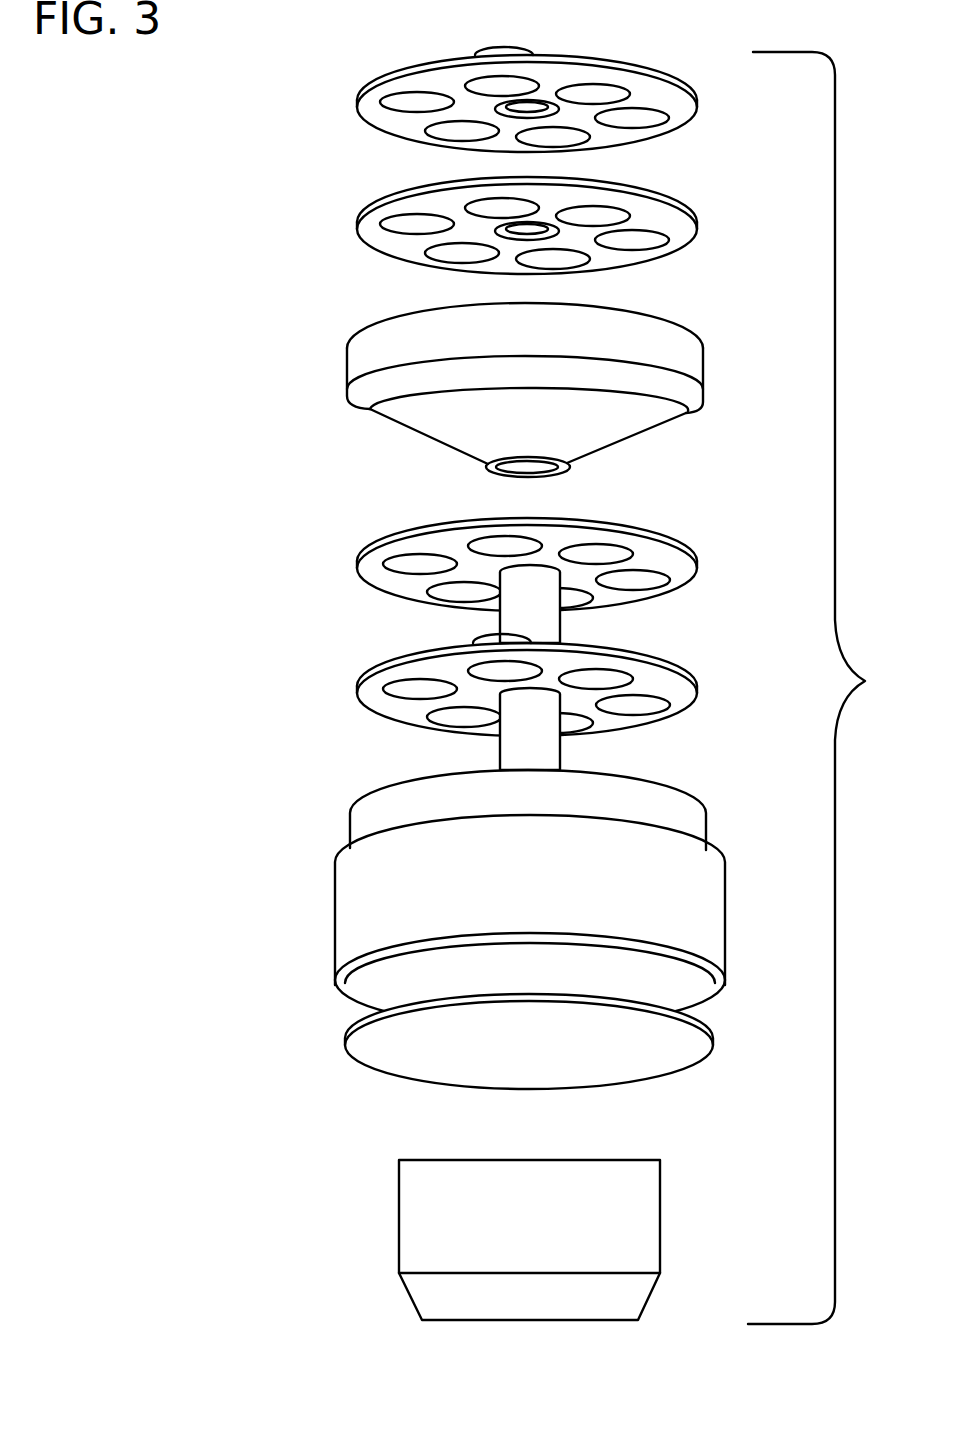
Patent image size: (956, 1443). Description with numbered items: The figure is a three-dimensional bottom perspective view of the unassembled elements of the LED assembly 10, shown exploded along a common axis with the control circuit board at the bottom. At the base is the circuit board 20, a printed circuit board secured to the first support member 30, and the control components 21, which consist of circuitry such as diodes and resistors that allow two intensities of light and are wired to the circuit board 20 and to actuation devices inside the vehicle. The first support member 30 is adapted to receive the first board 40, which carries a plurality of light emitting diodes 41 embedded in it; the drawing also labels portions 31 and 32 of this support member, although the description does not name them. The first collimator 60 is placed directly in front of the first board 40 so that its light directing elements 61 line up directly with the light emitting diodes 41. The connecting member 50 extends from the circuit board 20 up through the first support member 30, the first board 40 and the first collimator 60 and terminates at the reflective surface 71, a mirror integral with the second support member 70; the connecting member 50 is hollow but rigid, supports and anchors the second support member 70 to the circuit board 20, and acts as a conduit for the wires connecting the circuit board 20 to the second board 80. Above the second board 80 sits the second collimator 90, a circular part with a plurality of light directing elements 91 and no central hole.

The LED assembly 10 is at (825, 688).
The circuit board 20 is at (658, 1060).
The control components 21 is at (640, 1240).
The first support member 30 is at (683, 803).
The cylindrical body 31 is at (710, 850).
The bottom flange ring 32 is at (703, 922).
The first board 40 is at (682, 700).
The light emitting diodes 41 is at (410, 690).
The connecting member 50 is at (548, 628).
The first collimator 60 is at (683, 575).
The light directing elements 61 is at (598, 553).
The second support member 70 is at (687, 358).
The reflective surface 71 is at (613, 443).
The second board 80 is at (685, 233).
The second collimator 90 is at (667, 105).
The light directing elements 91 is at (637, 120).